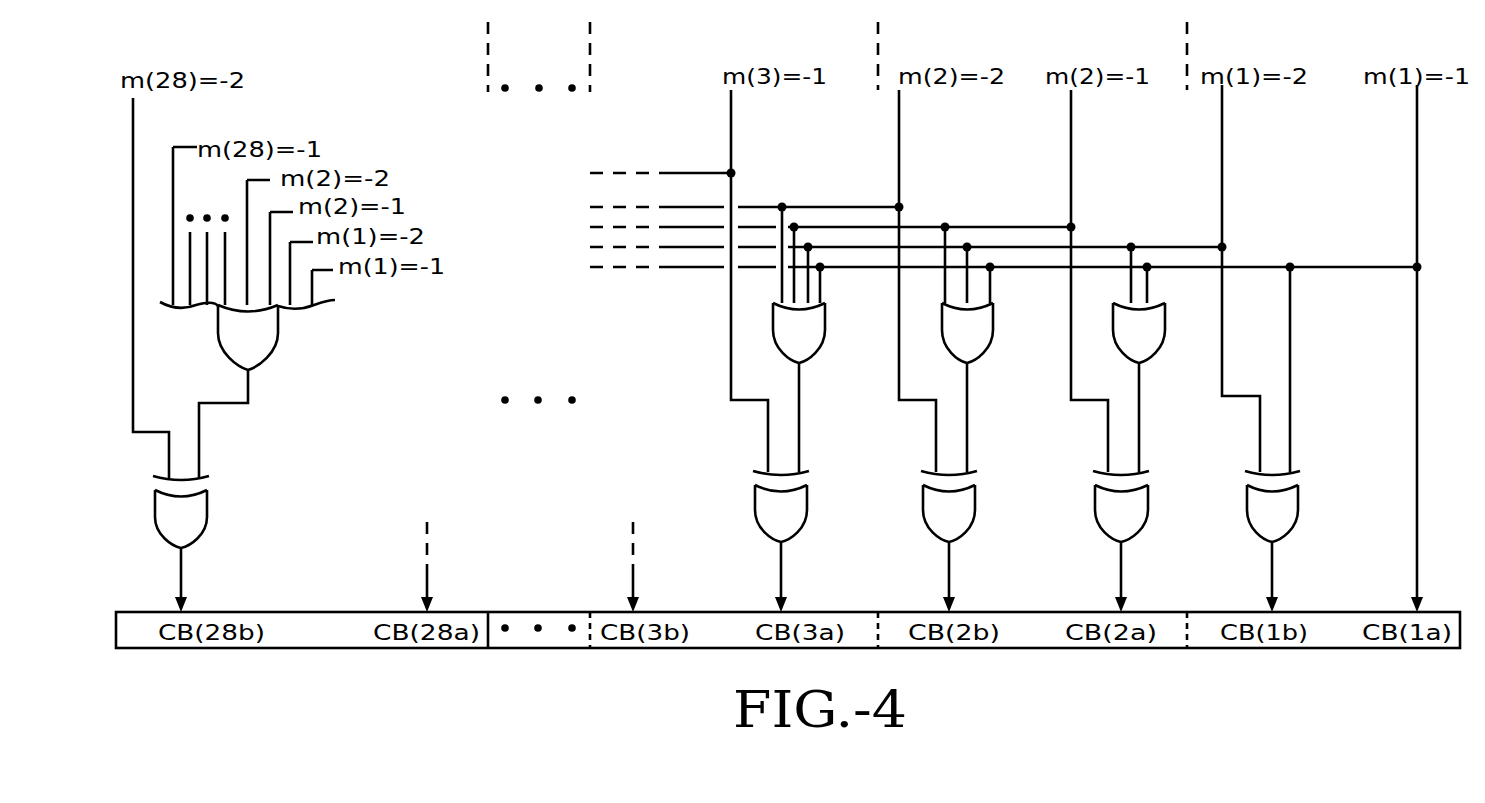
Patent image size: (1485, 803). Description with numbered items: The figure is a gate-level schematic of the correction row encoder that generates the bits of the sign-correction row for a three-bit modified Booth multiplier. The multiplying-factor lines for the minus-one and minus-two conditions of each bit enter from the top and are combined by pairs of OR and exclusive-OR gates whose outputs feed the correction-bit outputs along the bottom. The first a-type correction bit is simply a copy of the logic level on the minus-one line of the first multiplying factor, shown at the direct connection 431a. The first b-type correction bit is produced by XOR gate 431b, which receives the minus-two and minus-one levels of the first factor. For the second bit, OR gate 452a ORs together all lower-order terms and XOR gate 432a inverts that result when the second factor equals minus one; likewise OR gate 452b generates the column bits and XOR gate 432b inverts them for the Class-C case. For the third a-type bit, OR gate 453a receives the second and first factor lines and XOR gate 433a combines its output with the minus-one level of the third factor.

The OR gate 453a is at (808, 343).
The XOR gate 433a is at (786, 520).
The OR gate 452b is at (976, 343).
The XOR gate 432b is at (954, 520).
The OR gate 452a is at (1141, 343).
The XOR gate 432a is at (1126, 520).
The copy of the −1 line of bus m(1) 431a is at (1415, 398).
The XOR gate 431b is at (1277, 520).